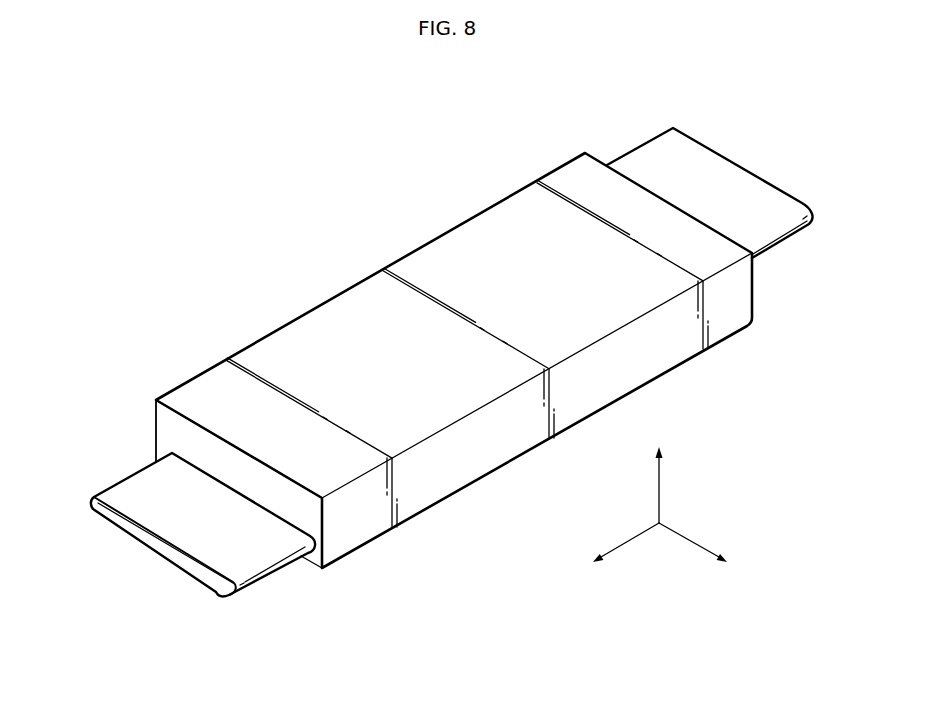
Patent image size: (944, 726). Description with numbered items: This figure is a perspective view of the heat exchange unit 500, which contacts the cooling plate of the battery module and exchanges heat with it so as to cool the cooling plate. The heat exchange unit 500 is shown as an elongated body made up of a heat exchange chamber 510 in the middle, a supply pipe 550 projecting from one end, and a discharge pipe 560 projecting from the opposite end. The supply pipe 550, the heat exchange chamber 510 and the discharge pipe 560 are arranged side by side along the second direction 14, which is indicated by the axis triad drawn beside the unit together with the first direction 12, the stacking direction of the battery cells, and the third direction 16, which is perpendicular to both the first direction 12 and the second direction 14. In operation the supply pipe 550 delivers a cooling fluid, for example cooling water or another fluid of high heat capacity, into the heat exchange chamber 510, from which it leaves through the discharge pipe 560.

The heat exchange unit 500 is at (278, 101).
The heat exchange chamber 510 is at (367, 300).
The supply pipe 550 is at (135, 480).
The discharge pipe 560 is at (657, 150).
The first direction 12 is at (709, 552).
The second direction 14 is at (611, 552).
The third direction 16 is at (664, 470).